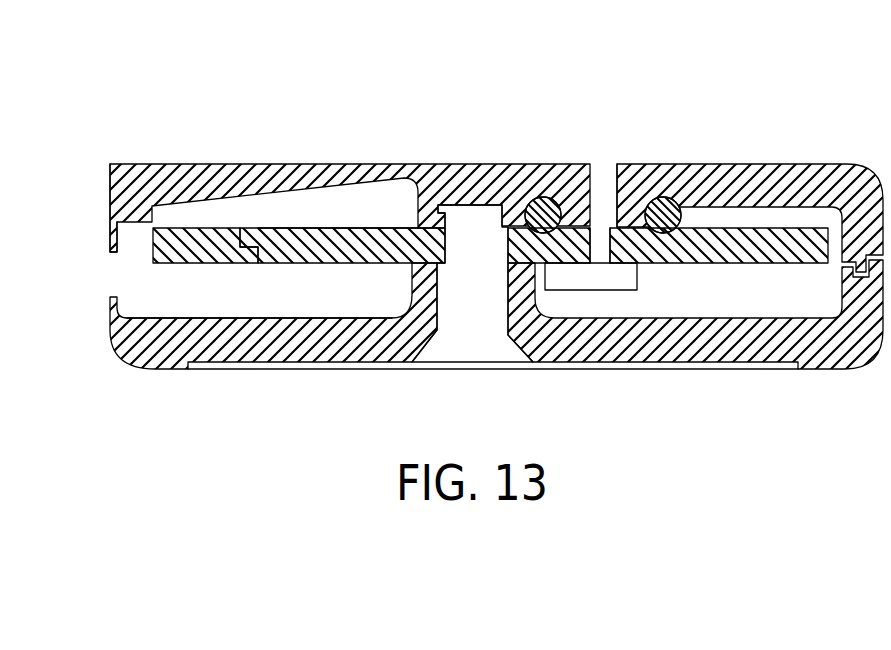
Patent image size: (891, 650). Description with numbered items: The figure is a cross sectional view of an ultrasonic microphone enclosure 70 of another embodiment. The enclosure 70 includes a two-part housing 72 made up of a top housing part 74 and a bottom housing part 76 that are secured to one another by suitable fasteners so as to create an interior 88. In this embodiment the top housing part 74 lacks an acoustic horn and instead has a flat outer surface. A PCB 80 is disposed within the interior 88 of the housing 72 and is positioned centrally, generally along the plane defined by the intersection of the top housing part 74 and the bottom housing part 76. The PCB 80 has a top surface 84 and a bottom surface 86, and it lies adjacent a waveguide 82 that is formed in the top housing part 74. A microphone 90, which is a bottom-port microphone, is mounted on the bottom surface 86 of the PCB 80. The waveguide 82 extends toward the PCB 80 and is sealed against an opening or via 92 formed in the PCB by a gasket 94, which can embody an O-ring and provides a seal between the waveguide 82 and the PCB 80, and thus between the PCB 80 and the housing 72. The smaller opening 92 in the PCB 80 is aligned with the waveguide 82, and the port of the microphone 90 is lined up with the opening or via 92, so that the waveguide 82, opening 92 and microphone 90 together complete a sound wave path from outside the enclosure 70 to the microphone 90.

The ultrasonic microphone enclosure 70 is at (755, 120).
The housing 72 is at (203, 162).
The top housing part 74 is at (110, 164).
The bottom housing part 76 is at (118, 347).
The PCB 80 is at (368, 252).
The waveguide 82 is at (613, 197).
The top surface 84 is at (302, 226).
The bottom surface 86 is at (172, 263).
The interior 88 is at (245, 300).
The microphone 90 is at (590, 280).
The opening or via 92 is at (510, 252).
The gasket 94 is at (600, 245).